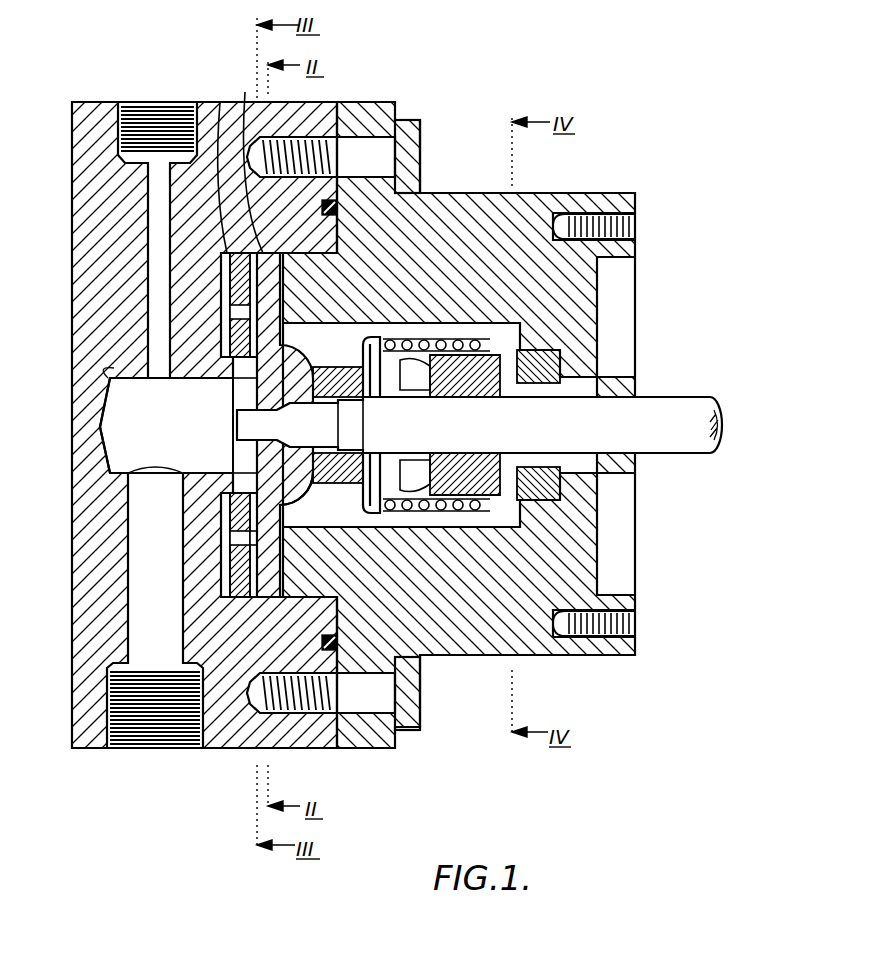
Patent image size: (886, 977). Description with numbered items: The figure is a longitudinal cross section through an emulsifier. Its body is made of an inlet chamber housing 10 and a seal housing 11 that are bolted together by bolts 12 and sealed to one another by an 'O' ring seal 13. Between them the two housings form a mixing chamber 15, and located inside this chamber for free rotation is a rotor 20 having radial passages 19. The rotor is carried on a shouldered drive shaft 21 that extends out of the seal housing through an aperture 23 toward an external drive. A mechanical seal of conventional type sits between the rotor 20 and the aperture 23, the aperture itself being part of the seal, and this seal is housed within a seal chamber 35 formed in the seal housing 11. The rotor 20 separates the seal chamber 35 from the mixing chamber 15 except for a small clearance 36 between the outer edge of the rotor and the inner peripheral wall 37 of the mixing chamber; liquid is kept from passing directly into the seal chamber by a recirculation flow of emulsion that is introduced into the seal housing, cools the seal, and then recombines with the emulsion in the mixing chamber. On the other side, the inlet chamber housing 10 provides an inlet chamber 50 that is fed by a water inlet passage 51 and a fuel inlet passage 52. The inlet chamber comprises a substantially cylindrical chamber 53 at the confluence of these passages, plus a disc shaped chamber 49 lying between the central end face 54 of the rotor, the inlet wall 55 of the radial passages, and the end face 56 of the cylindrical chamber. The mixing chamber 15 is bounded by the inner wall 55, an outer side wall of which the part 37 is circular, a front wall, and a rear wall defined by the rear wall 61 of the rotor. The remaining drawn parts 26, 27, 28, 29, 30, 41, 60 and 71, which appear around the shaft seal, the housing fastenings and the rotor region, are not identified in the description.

The inlet chamber housing 10 is at (72, 527).
The seal housing 11 is at (540, 207).
The bolts 12 is at (413, 148).
The 'O' ring seal 13 is at (337, 210).
The mixing chamber 15 is at (227, 284).
The radial passages 19 is at (253, 270).
The rotor 20 is at (282, 363).
The shouldered drive shaft 21 is at (660, 405).
The aperture 23 is at (583, 457).
The ring 26 is at (340, 370).
The spring 27 is at (378, 337).
The seal ring 28 is at (460, 328).
The seal ring 29 is at (483, 467).
The ring 30 is at (503, 467).
The seal chamber 35 is at (352, 488).
The clearance 36 is at (244, 100).
The inner peripheral wall 37 is at (232, 90).
The screw 41 is at (635, 227).
The disc shaped chamber 49 is at (235, 393).
The inlet chamber 50 is at (131, 436).
The water inlet passage 51 is at (122, 206).
The fuel inlet passage 52 is at (130, 610).
The cylindrical chamber 53 is at (96, 370).
The central end face 54 is at (233, 481).
The inlet wall 55 is at (221, 392).
The end face 56 is at (232, 447).
The ring 60 is at (240, 312).
The rear wall 61 is at (278, 521).
The ring 71 is at (246, 538).